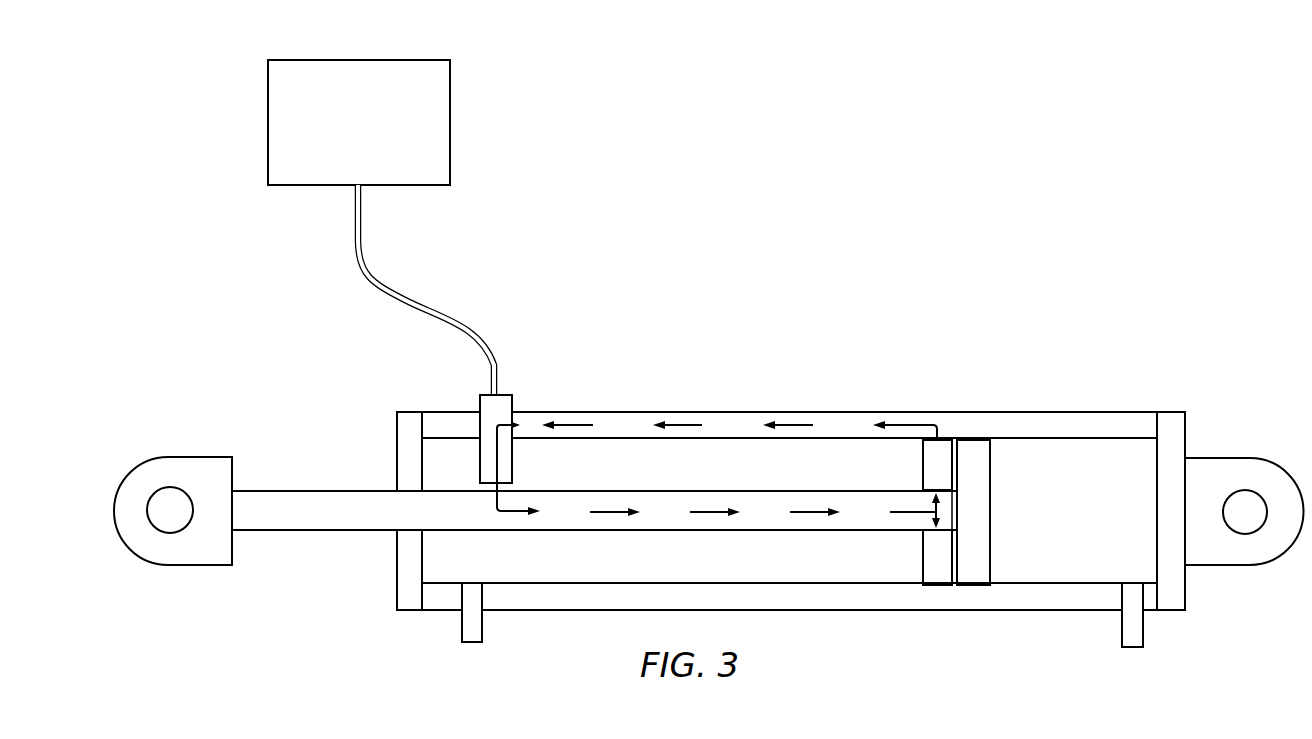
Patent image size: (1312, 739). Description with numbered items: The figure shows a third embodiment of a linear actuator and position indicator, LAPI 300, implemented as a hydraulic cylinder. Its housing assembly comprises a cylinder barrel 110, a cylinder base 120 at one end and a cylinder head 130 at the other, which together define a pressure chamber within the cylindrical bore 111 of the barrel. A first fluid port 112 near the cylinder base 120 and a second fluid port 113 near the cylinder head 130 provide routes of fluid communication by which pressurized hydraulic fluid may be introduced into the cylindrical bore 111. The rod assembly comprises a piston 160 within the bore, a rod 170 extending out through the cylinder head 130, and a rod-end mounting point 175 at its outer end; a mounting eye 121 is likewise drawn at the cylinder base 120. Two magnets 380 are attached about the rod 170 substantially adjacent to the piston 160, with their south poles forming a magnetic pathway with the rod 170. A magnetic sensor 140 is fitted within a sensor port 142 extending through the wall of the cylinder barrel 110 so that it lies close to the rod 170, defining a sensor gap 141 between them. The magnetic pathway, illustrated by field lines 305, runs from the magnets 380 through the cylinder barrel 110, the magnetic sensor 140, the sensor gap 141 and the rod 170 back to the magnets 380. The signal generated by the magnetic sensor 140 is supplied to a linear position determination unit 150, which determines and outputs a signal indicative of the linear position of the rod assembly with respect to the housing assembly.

The cylinder barrel 110 is at (773, 595).
The cylindrical bore 111 is at (670, 582).
The first fluid port 112 is at (1128, 648).
The second fluid port 113 is at (472, 643).
The cylinder base 120 is at (1167, 582).
The mounting eye 121 is at (1223, 468).
The cylinder head 130 is at (410, 572).
The magnetic sensor 140 is at (502, 407).
The sensor gap 141 is at (478, 489).
The sensor port 142 is at (478, 423).
The linear position determination unit 150 is at (375, 138).
The piston 160 is at (990, 553).
The rod 170 is at (742, 488).
The rod-end mounting point 175 is at (137, 557).
The linear actuator and position indicator (LAPI) 300 is at (1020, 121).
The field lines 305 is at (683, 425).
The magnets 380 is at (922, 456).